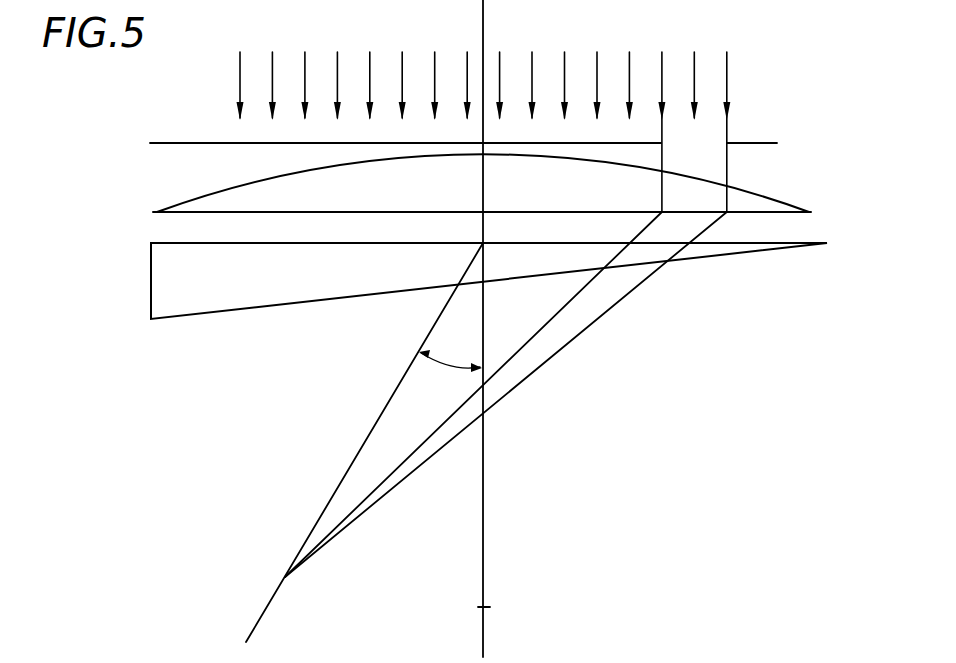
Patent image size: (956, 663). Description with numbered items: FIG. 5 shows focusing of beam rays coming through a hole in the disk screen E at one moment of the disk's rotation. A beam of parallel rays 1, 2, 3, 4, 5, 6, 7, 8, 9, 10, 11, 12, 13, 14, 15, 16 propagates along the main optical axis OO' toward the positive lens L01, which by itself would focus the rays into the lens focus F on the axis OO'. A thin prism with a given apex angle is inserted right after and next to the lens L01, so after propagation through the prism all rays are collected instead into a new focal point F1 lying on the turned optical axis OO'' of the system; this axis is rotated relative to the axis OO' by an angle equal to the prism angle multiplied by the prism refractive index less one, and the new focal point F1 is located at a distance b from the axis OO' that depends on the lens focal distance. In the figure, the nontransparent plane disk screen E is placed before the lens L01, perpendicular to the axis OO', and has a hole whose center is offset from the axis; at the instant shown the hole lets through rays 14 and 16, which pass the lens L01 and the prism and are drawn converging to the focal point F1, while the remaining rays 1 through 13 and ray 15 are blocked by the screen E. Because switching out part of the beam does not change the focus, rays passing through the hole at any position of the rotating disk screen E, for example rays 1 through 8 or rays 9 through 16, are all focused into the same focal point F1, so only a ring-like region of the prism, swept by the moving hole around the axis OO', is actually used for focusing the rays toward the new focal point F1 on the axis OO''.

The ray 1 is at (239, 73).
The ray 2 is at (272, 73).
The ray 3 is at (304, 73).
The ray 4 is at (337, 73).
The ray 5 is at (369, 73).
The ray 6 is at (402, 73).
The ray 7 is at (435, 73).
The ray 8 is at (467, 73).
The ray 9 is at (496, 73).
The ray 10 is at (532, 73).
The ray 11 is at (564, 72).
The ray 12 is at (597, 73).
The ray 13 is at (629, 72).
The ray 14 is at (481, 301).
The ray 15 is at (694, 72).
The ray 16 is at (513, 301).
The disk screen E is at (474, 147).
The positive lens L01 is at (506, 193).
The lens focus F is at (500, 599).
The new focal point F1 is at (311, 591).
The main optical axis O' is at (500, 328).
The turned optical axis O'' is at (364, 446).